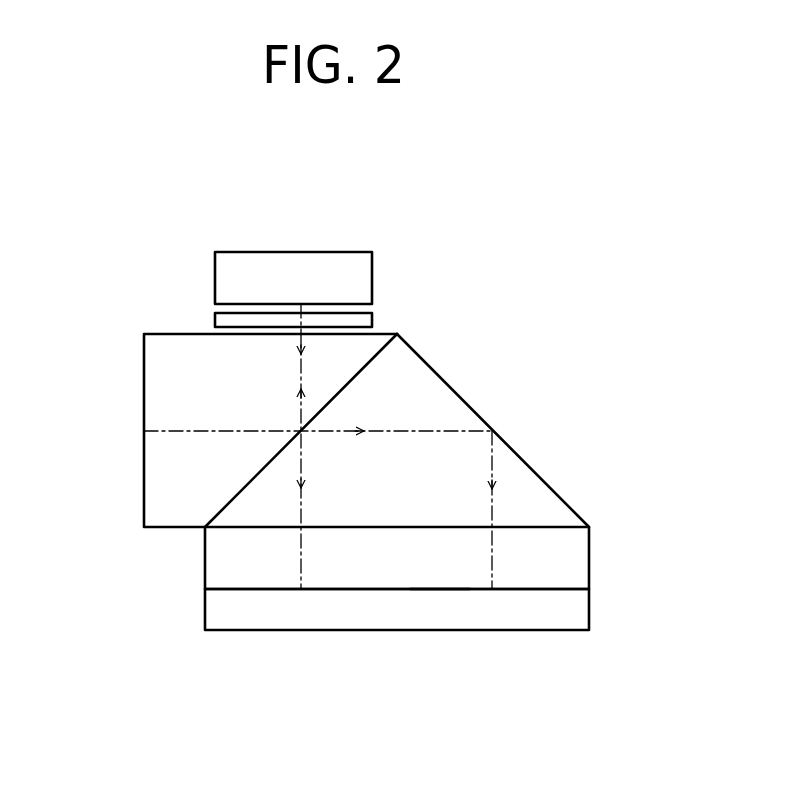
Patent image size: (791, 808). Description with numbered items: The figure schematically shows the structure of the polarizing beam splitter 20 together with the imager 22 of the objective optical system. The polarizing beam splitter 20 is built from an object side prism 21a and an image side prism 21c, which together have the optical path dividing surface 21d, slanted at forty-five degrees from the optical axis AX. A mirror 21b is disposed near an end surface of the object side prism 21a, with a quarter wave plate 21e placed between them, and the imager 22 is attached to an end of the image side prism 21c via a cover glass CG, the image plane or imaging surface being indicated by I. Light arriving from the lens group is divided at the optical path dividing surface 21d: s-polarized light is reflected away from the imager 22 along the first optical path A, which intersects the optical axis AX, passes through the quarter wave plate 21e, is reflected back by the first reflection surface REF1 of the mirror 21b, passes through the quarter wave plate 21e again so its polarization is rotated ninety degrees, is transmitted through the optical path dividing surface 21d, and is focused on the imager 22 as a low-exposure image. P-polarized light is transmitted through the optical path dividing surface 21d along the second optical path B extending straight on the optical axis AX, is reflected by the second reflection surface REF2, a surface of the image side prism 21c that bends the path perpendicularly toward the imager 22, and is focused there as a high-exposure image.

The polarizing beam splitter 20 is at (465, 212).
The object side prism 21a is at (186, 463).
The mirror 21b is at (315, 252).
The image side prism 21c is at (523, 480).
The optical path dividing surface 21d is at (237, 487).
The quarter wave plate 21e is at (215, 320).
The imager 22 is at (557, 631).
The cover glass CG is at (590, 555).
The image plane I is at (448, 586).
The optical axis AX is at (158, 430).
The first optical path A is at (300, 375).
The second optical path B is at (393, 432).
The first reflection surface REF1 is at (260, 303).
The second reflection surface REF2 is at (460, 393).